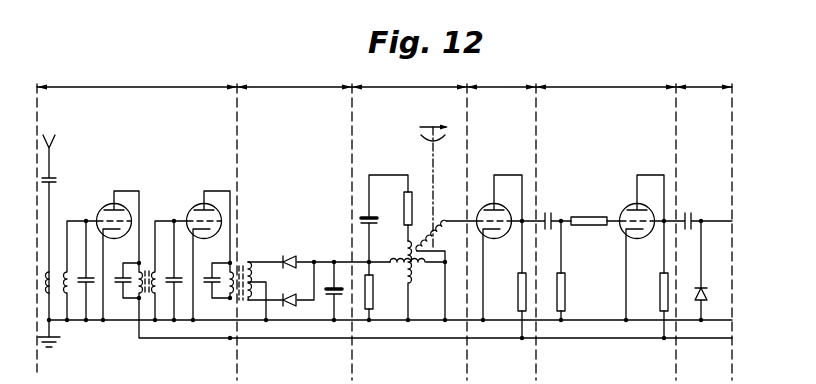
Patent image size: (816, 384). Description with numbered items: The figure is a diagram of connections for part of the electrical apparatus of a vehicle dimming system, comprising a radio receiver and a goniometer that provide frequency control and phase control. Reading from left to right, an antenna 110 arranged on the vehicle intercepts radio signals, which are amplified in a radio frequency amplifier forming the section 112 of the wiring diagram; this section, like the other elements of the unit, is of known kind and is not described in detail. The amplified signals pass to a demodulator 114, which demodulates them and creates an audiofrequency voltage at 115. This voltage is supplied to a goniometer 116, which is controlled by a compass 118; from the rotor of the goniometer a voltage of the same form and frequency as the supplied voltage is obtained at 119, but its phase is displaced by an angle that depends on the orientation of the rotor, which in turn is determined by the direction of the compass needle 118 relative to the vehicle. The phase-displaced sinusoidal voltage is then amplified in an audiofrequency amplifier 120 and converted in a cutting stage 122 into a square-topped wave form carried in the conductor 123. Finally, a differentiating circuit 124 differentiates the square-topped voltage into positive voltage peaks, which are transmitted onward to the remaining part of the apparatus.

The antenna 110 is at (50, 163).
The radio frequency amplifier section 112 is at (108, 87).
The demodulator 114 is at (263, 87).
The audiofrequency voltage point 115 is at (336, 260).
The goniometer 116 is at (418, 218).
The compass 118 is at (424, 128).
The goniometer rotor output 119 is at (454, 220).
The audiofrequency amplifier 120 is at (508, 87).
The cutting stage 122 is at (657, 218).
The conductor 123 is at (634, 176).
The differentiating circuit 124 is at (690, 87).